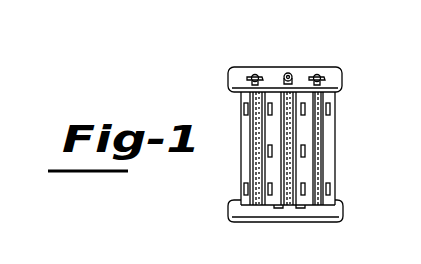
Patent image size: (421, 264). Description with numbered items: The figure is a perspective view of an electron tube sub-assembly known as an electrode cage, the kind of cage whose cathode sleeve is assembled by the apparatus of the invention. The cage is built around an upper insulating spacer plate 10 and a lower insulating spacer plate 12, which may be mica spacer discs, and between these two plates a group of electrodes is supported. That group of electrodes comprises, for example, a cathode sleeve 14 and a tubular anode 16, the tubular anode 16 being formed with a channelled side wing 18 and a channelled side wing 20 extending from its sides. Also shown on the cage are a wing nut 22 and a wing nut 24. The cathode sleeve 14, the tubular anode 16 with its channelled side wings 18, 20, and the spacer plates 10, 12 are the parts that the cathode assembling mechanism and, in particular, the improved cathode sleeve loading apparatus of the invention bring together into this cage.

The upper insulating spacer plate 10 is at (338, 78).
The lower insulating spacer plate 12 is at (345, 213).
The cathode sleeve 14 is at (289, 73).
The tubular anode 16 is at (288, 207).
The channelled side wing 18 is at (241, 168).
The channelled side wing 20 is at (336, 150).
The wing nut 22 is at (255, 74).
The wing nut 24 is at (319, 74).